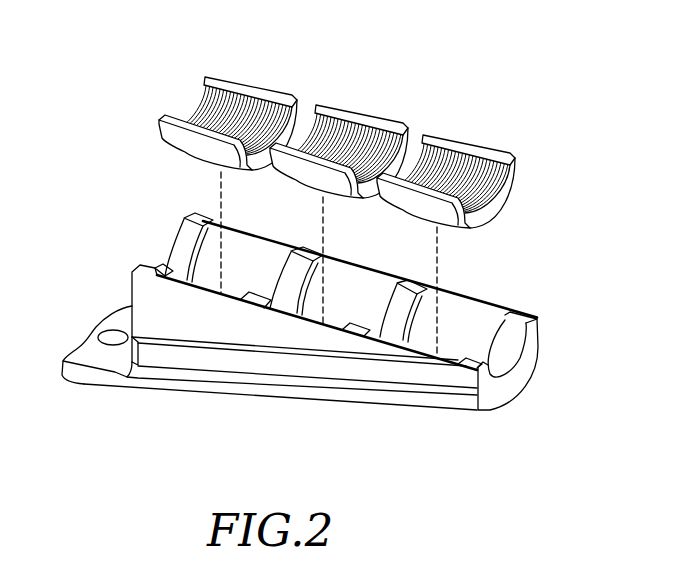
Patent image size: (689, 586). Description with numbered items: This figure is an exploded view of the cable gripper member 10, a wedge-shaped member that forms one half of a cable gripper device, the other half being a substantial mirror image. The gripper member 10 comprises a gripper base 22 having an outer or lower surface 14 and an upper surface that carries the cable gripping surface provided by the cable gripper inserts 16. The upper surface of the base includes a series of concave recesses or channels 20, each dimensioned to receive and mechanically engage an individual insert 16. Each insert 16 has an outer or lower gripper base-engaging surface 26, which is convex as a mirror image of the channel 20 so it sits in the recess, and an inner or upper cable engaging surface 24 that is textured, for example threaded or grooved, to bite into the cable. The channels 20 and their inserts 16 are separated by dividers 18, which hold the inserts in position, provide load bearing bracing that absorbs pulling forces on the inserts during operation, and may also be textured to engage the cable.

The cable gripper member 10 is at (92, 233).
The outer or lower surface 14 is at (318, 402).
The cable gripper insert 16 is at (270, 96).
The dividers 18 is at (514, 338).
The recess 20 is at (465, 322).
The gripper base 22 is at (220, 350).
The cable engaging surface 24 is at (208, 82).
The gripper base-engaging surface 26 is at (465, 213).